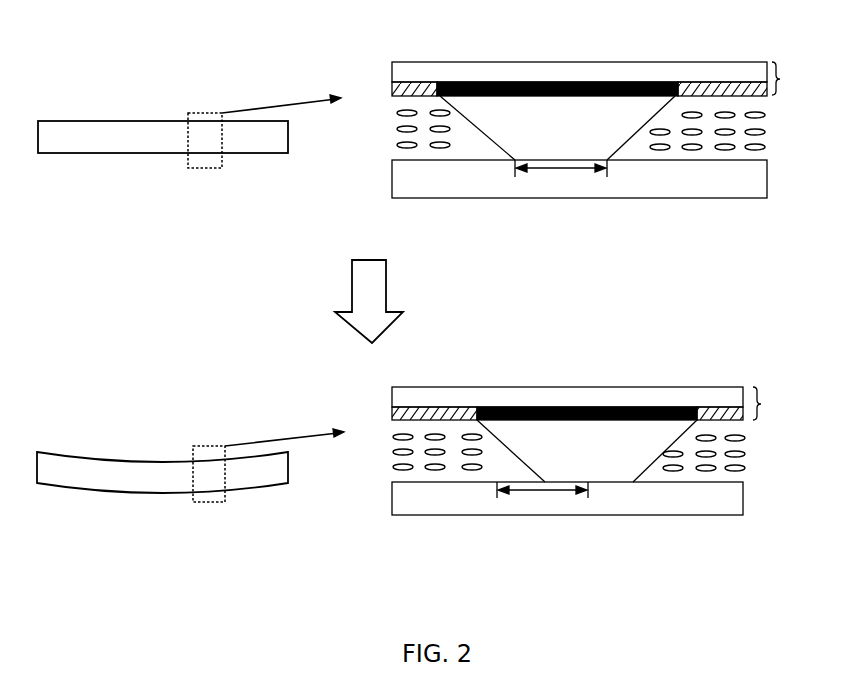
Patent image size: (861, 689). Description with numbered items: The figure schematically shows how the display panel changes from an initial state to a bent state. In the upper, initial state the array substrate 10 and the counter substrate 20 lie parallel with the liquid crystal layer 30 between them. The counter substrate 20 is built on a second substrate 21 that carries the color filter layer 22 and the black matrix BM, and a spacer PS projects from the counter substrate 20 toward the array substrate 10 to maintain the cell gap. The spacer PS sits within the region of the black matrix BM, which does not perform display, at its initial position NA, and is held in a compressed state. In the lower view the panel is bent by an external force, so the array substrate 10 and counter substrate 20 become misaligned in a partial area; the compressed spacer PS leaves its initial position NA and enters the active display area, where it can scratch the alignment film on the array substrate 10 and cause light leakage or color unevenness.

The array substrate 10 is at (767, 190).
The counter substrate 20 is at (781, 241).
The second substrate 21 is at (742, 62).
The color filter layer 22 is at (707, 82).
The liquid crystal layer 30 is at (774, 130).
The black matrix BM is at (639, 82).
The spacer PS is at (613, 122).
The initial position NA is at (552, 336).